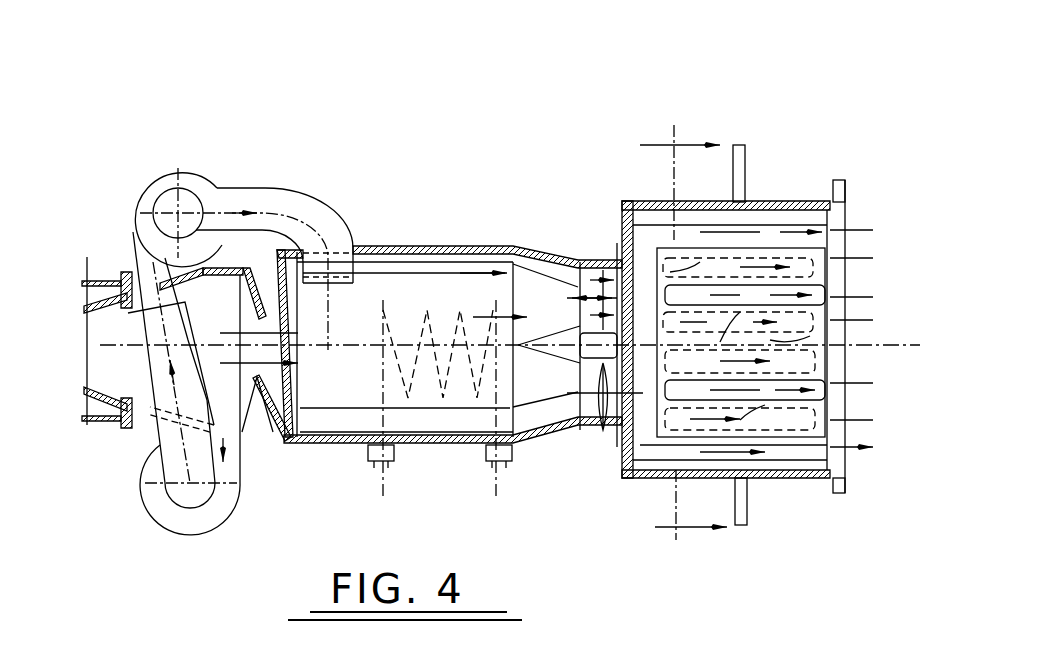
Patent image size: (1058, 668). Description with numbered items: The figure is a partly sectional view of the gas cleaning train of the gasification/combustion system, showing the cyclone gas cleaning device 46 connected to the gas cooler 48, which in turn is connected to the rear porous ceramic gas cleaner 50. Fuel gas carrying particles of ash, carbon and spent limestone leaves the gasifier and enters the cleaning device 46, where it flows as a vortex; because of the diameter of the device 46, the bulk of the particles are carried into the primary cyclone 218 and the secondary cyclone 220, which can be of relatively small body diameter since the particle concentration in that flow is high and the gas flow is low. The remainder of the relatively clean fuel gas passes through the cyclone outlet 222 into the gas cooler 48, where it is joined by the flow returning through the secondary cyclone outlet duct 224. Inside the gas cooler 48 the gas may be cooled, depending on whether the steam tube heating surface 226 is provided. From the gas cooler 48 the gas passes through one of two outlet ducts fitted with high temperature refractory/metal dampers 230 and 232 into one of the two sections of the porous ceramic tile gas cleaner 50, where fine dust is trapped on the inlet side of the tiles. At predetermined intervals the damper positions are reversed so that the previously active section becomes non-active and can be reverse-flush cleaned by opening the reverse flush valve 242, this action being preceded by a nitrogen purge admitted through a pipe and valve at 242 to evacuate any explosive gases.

The cyclone gas cleaning device 46 is at (187, 538).
The gas cooler 48 is at (435, 245).
The rear porous ceramic gas cleaner 50 is at (772, 157).
The primary cyclone 218 is at (148, 512).
The secondary cyclone 220 is at (183, 172).
The cyclone outlet 222 is at (258, 383).
The secondary cyclone outlet duct 224 is at (300, 187).
The steam tube heating surface 226 is at (380, 393).
The damper 230 is at (572, 292).
The damper 232 is at (597, 402).
The reverse flush valve 242 is at (748, 520).